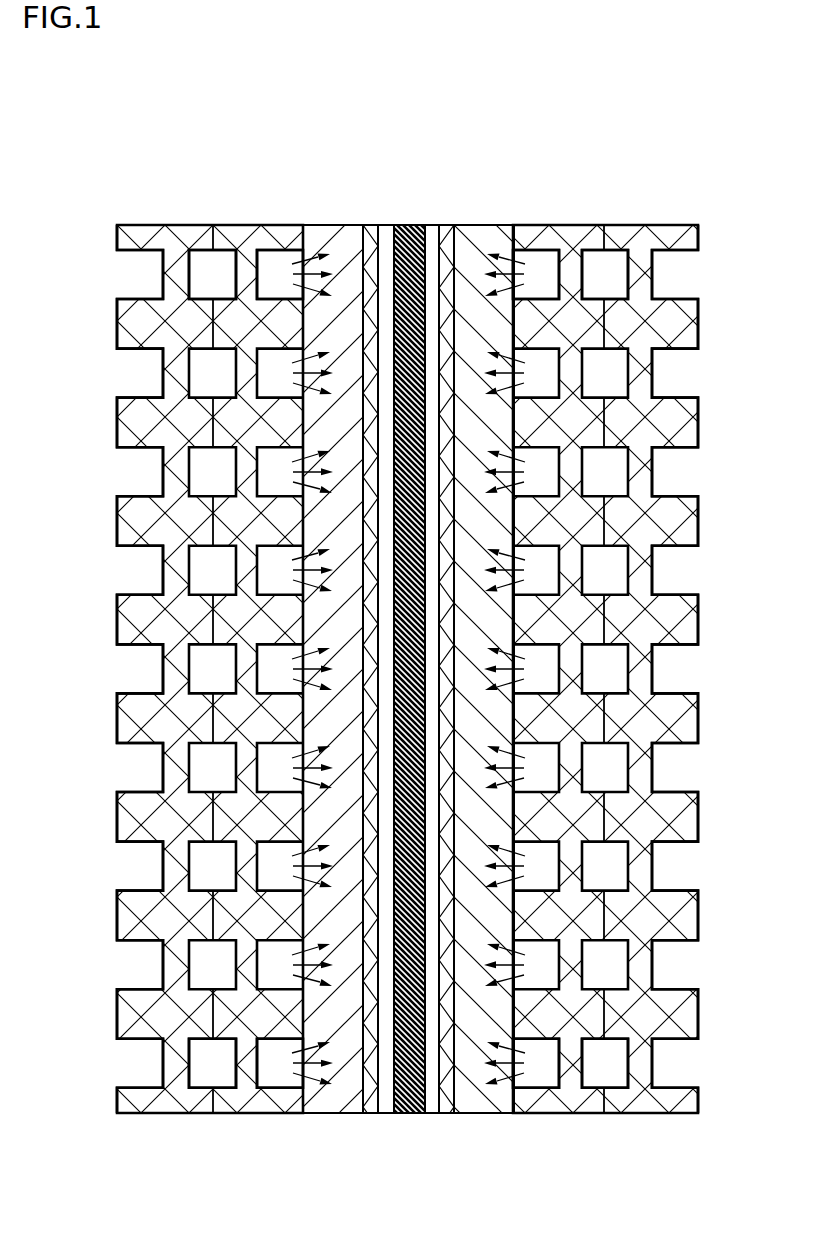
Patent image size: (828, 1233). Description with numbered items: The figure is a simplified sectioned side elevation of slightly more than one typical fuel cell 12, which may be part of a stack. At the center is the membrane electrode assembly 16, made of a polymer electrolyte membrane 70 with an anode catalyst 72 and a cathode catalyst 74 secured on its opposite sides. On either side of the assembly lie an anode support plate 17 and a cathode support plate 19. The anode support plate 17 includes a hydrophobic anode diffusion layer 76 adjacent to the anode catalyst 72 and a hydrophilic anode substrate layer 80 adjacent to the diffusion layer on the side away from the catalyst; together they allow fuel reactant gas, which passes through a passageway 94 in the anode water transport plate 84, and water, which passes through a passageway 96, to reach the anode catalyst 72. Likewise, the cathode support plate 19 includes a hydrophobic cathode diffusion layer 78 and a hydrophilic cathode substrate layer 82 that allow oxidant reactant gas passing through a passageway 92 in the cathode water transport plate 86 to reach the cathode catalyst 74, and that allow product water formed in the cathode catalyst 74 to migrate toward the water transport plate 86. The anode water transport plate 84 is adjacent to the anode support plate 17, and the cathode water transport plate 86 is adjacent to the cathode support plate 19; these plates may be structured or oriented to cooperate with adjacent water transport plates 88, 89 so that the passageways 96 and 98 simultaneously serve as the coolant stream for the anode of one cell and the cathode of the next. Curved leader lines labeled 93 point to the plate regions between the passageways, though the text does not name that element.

The fuel cell 12 is at (115, 200).
The membrane electrode assembly 16 is at (439, 218).
The anode support plate 17 is at (378, 218).
The cathode support plate 19 is at (514, 218).
The polymer electrolyte membrane 70 is at (415, 1113).
The anode catalyst 72 is at (393, 1113).
The cathode catalyst 74 is at (435, 1113).
The anode diffusion layer 76 is at (368, 1113).
The cathode diffusion layer 78 is at (448, 1113).
The anode substrate layer 80 is at (327, 1105).
The cathode substrate layer 82 is at (495, 1113).
The anode water transport plate 84 is at (237, 1105).
The cathode water transport plate 86 is at (582, 1105).
The adjacent water transport plate 88 is at (135, 1105).
The adjacent water transport plate 89 is at (688, 1102).
The oxidant passageway 92 is at (550, 284).
The flow field plate lands 93 is at (293, 322).
The fuel passageway 94 is at (289, 283).
The water passageway 96 is at (199, 284).
The water passageway 98 is at (619, 284).